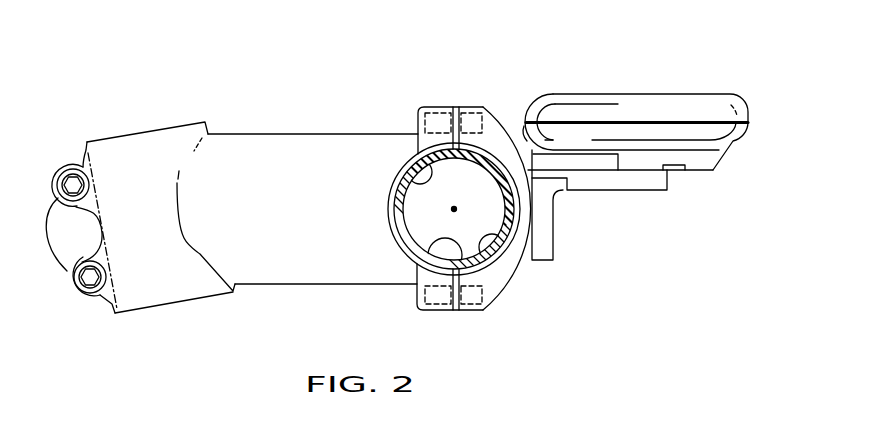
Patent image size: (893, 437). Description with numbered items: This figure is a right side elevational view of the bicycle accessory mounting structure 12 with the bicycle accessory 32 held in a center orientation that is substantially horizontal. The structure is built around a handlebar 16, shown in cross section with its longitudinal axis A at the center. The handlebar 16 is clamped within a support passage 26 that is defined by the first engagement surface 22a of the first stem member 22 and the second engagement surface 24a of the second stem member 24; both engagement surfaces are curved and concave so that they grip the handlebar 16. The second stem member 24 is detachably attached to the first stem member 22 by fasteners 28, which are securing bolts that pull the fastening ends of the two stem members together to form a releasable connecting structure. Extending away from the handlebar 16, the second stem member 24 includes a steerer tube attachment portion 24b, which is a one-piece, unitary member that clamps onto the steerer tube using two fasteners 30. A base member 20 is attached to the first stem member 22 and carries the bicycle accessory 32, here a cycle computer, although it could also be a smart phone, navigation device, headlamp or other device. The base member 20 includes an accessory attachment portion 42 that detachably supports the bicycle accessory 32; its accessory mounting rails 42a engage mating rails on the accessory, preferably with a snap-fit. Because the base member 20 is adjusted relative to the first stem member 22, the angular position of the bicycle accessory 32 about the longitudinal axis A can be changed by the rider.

The bicycle accessory mounting structure 12 is at (574, 41).
The handlebar 16 is at (386, 231).
The base member 20 is at (563, 247).
The first stem member 22 is at (468, 100).
The first engagement surface 22a is at (423, 243).
The second stem member 24 is at (300, 128).
The second engagement surface 24a is at (419, 183).
The steerer tube attachment portion 24b is at (140, 130).
The support passage 26 is at (417, 254).
The fasteners 28 is at (491, 114).
The fasteners 30 is at (69, 231).
The bicycle accessory 32 is at (674, 88).
The accessory attachment portion 42 is at (563, 215).
The accessory mounting rails 42a is at (620, 161).
The longitudinal axis A is at (452, 208).